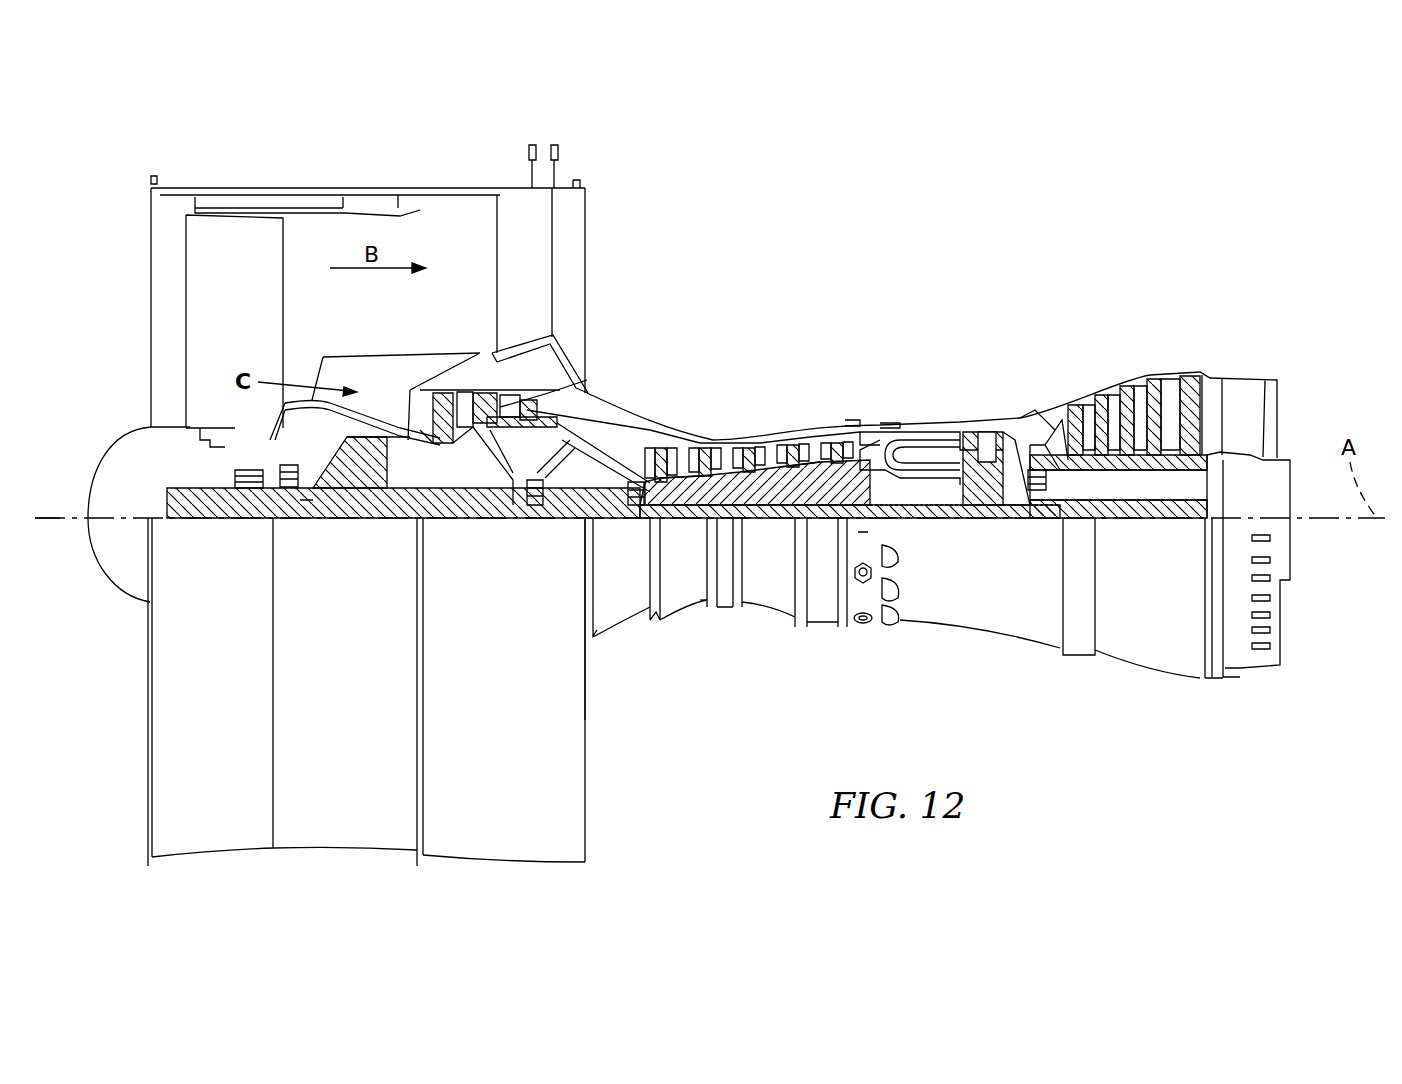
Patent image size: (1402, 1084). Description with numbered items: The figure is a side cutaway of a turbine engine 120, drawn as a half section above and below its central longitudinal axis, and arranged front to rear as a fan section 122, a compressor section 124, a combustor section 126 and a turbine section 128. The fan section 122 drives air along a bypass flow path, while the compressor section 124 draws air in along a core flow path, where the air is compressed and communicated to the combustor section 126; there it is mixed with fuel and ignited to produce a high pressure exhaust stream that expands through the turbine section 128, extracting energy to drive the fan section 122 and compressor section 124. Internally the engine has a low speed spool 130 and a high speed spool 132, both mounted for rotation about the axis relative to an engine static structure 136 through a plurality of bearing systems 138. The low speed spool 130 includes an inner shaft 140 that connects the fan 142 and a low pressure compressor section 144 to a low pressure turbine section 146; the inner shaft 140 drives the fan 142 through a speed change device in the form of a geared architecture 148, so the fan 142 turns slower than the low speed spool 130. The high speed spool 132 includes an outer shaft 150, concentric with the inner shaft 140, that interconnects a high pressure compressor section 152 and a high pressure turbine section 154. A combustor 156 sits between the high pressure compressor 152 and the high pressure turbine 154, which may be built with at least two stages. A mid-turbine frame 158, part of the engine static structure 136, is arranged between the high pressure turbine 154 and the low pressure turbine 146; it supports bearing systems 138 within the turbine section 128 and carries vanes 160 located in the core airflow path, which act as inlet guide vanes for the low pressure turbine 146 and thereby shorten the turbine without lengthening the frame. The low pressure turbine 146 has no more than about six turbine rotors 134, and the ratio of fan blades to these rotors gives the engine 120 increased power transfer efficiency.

The turbine engine 120 is at (948, 248).
The fan section 122 is at (350, 164).
The compressor section 124 is at (905, 323).
The combustor section 126 is at (1013, 323).
The turbine section 128 is at (1230, 323).
The low speed spool 130 is at (773, 522).
The high speed spool 132 is at (818, 478).
The turbine rotors 134 is at (1206, 480).
The engine static structure 136 is at (823, 625).
The bearing systems 138 is at (243, 522).
The inner shaft 140 is at (612, 522).
The fan 142 is at (250, 322).
The low pressure compressor section 144 is at (520, 412).
The low pressure turbine section 146 is at (1140, 395).
The geared architecture 148 is at (372, 520).
The outer shaft 150 is at (905, 500).
The high pressure compressor section 152 is at (755, 472).
The high pressure turbine section 154 is at (990, 445).
The combustor 156 is at (908, 450).
The mid-turbine frame 158 is at (1040, 440).
The vanes 160 is at (1067, 440).